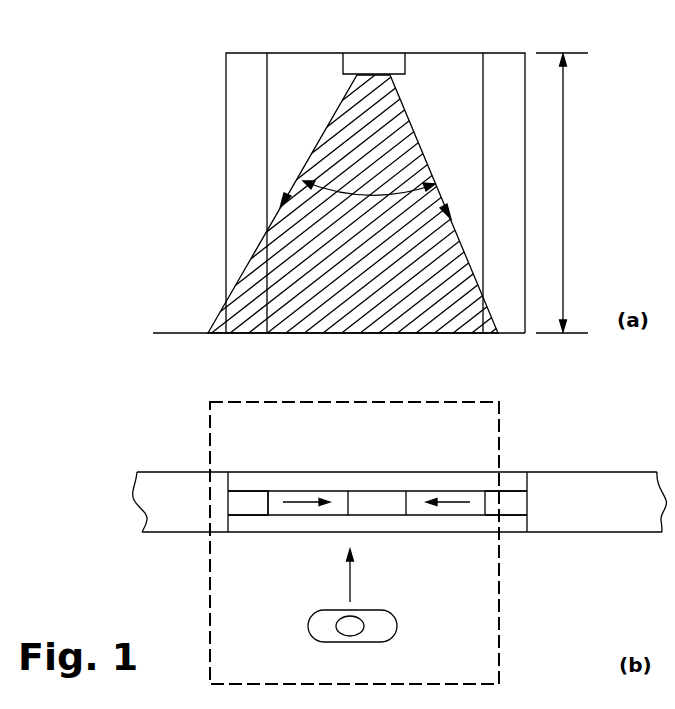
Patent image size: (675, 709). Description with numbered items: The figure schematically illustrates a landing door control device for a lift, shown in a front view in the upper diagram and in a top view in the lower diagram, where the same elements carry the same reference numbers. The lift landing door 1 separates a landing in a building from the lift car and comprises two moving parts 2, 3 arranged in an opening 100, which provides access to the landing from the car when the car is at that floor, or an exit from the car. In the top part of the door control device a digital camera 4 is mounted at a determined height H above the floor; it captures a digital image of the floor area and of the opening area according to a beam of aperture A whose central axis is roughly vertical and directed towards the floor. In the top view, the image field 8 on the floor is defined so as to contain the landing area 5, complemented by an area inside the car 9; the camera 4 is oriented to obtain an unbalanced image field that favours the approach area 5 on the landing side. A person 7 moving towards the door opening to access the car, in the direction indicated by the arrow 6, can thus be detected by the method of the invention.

The lighting device 1 is at (450, 68).
The moving part 2 is at (513, 99).
The moving part 3 is at (253, 99).
The digital camera 4 is at (358, 63).
The landing area 5 is at (438, 584).
The arrow 6 is at (347, 578).
The person 7 is at (317, 621).
The image field 8 is at (500, 608).
The area inside the car 9 is at (440, 449).
The opening 100 is at (299, 66).
The aperture A is at (369, 204).
The height H is at (563, 193).